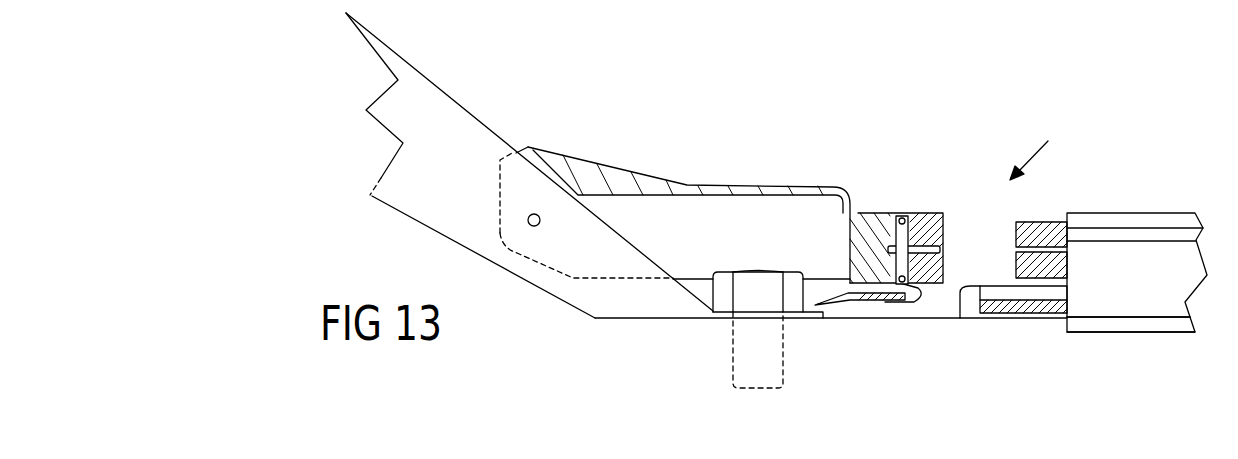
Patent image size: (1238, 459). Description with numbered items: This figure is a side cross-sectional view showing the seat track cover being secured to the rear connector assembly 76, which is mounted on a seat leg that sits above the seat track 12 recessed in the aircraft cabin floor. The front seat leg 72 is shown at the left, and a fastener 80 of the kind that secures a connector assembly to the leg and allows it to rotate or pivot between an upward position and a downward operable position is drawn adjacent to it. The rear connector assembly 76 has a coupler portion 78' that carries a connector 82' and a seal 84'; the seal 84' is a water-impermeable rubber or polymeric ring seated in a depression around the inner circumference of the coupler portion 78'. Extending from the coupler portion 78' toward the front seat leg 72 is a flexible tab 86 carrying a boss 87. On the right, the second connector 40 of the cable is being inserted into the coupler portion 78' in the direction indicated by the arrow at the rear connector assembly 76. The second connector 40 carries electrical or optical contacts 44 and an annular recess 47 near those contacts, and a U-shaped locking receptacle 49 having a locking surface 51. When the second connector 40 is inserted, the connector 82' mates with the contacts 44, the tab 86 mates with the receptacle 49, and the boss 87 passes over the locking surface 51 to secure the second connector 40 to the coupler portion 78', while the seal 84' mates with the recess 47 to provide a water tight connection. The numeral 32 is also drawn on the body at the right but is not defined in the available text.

The front seat leg 72 is at (452, 135).
The fastener 80 is at (536, 226).
The coupler portion 78' is at (904, 221).
The connector 82' is at (941, 215).
The seal 84' is at (946, 250).
The tab 86 is at (843, 312).
The boss 87 is at (882, 301).
The seat track 12 is at (890, 318).
The locking surface 51 is at (960, 300).
The locking receptacle 49 is at (1032, 313).
The frame member 32 is at (1160, 333).
The rear connector assembly 76 is at (1048, 141).
The electrical/optical contacts 44 is at (1017, 249).
The annular recess 47 is at (1030, 226).
The second connector 40 is at (1050, 226).